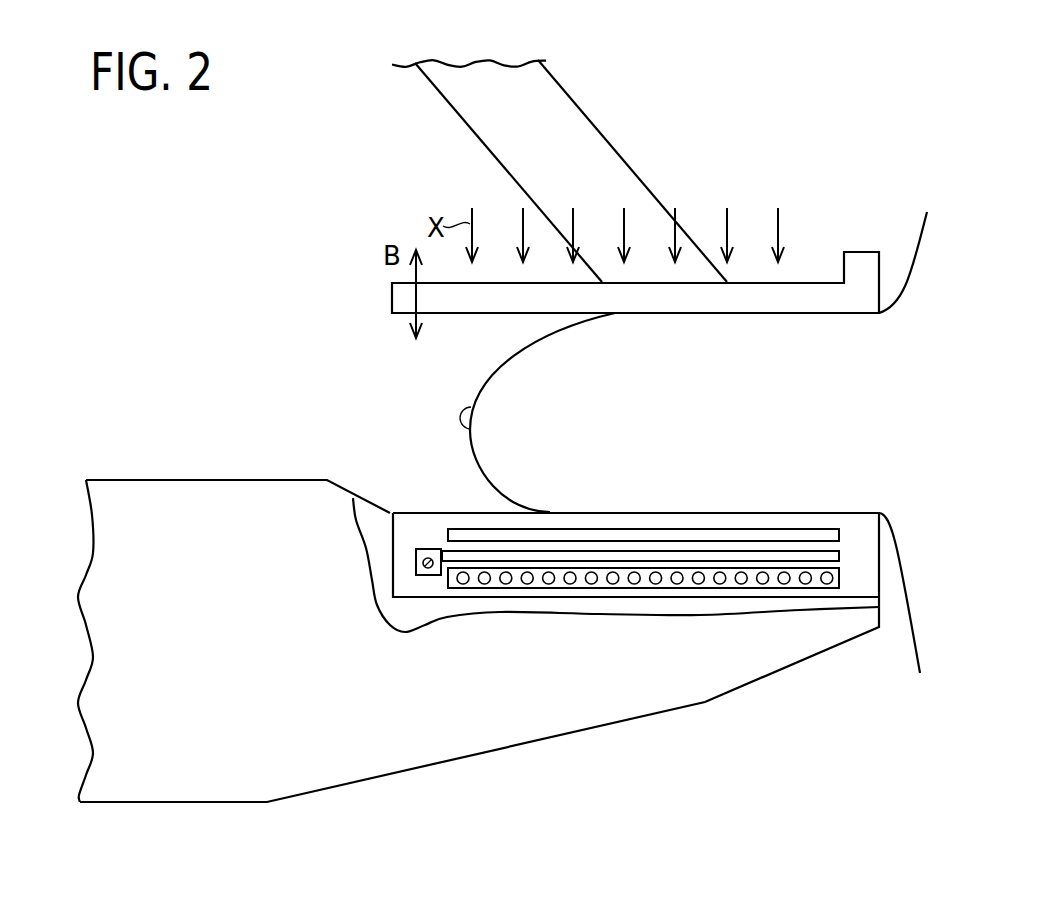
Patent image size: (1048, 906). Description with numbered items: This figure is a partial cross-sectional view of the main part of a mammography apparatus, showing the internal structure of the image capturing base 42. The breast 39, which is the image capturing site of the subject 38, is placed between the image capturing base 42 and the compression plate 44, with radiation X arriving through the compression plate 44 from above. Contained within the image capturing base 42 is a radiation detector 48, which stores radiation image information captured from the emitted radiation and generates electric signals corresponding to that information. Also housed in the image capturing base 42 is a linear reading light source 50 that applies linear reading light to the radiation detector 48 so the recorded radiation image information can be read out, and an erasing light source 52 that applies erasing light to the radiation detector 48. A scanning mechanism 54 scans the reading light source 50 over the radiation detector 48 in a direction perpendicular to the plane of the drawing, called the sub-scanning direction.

The subject 38 is at (930, 600).
The breast 39 is at (497, 388).
The image capturing base 42 is at (573, 728).
The compression plate 44 is at (858, 265).
The radiation detector 48 is at (682, 540).
The linear reading light source 50 is at (752, 560).
The erasing light source 52 is at (498, 578).
The scanning mechanism 54 is at (416, 567).